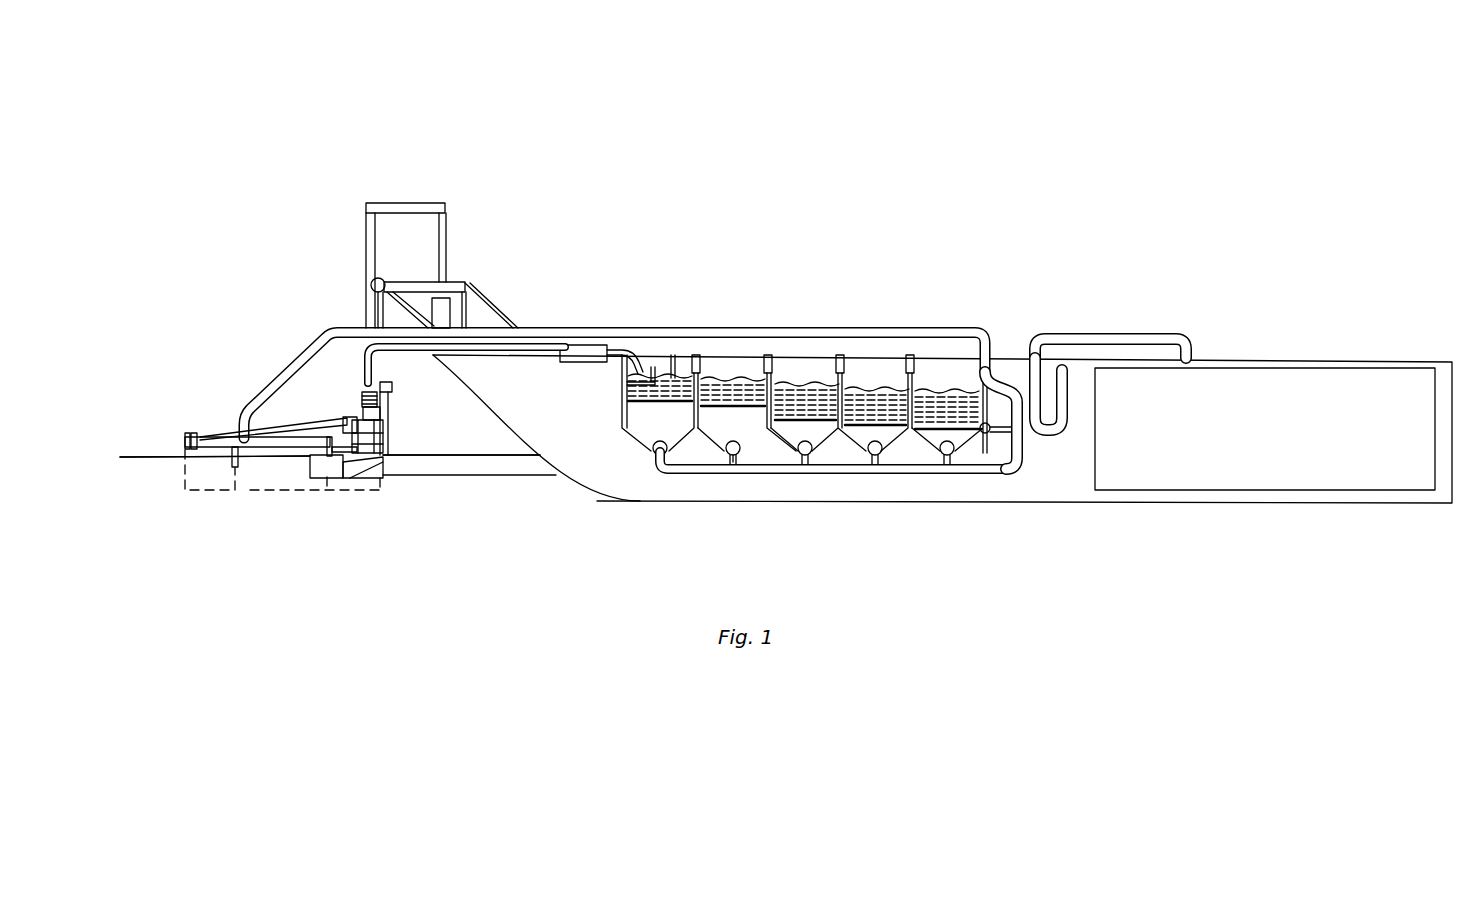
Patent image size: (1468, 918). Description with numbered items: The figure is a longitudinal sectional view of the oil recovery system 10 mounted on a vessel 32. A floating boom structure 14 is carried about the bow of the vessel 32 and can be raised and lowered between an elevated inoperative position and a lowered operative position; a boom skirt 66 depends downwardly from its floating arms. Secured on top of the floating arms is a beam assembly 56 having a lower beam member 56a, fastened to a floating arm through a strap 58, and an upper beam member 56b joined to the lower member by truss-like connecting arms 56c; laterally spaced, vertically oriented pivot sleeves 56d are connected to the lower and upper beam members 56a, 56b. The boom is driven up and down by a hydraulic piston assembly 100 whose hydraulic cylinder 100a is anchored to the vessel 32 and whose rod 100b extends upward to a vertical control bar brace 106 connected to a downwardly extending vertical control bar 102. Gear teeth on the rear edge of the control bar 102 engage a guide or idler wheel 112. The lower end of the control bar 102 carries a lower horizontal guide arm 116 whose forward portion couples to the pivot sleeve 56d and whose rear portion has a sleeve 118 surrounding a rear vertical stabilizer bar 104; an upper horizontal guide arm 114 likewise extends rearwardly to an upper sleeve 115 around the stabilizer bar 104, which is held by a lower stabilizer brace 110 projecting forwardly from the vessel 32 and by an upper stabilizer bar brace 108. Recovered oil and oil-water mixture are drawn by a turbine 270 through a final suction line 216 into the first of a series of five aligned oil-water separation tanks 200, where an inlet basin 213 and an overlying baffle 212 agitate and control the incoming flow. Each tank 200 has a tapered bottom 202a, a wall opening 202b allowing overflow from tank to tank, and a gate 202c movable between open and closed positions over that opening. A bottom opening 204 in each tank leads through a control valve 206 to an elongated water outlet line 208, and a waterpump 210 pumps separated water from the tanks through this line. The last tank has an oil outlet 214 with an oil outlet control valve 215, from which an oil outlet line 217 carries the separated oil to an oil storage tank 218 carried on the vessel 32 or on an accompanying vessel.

The oil recovery system 10 is at (671, 86).
The floating boom structure 14 is at (290, 535).
The vessel 32 is at (885, 505).
The beam assembly 56 is at (229, 416).
The lower beam member 56a is at (213, 449).
The upper beam member 56b is at (203, 436).
The truss-like connecting arms 56c is at (340, 420).
The pivot sleeves 56d is at (360, 416).
The strap 58 is at (250, 491).
The boom skirt 66 is at (213, 492).
The hydraulic piston assembly 100 is at (419, 233).
The hydraulic cylinder 100a is at (450, 307).
The rod 100b is at (447, 222).
The vertical control bar 102 is at (366, 268).
The rear vertical stabilizer bar 104 is at (377, 316).
The vertical control bar brace 106 is at (385, 201).
The upper stabilizer bar brace 108 is at (430, 288).
The lower stabilizer brace 110 is at (466, 457).
The idler wheel 112 is at (373, 281).
The upper horizontal guide arm 114 is at (378, 400).
The upper sleeve 115 is at (392, 386).
The lower horizontal guide arm 116 is at (381, 411).
The sleeve 118 is at (383, 428).
The tank 200 is at (779, 398).
The tapered bottom 202a is at (643, 452).
The wall opening 202b is at (709, 365).
The gate 202c is at (915, 374).
The bottom opening 204 is at (806, 464).
The control valve 206 is at (738, 456).
The water outlet line 208 is at (541, 332).
The waterpump 210 is at (994, 391).
The baffle 212 is at (651, 376).
The inlet basin 213 is at (634, 376).
The oil outlet 214 is at (983, 432).
The oil outlet control valve 215 is at (987, 434).
The final suction line 216 is at (1047, 381).
The oil outlet line 217 is at (1141, 334).
The oil storage tank 218 is at (1318, 465).
The turbine 270 is at (646, 362).